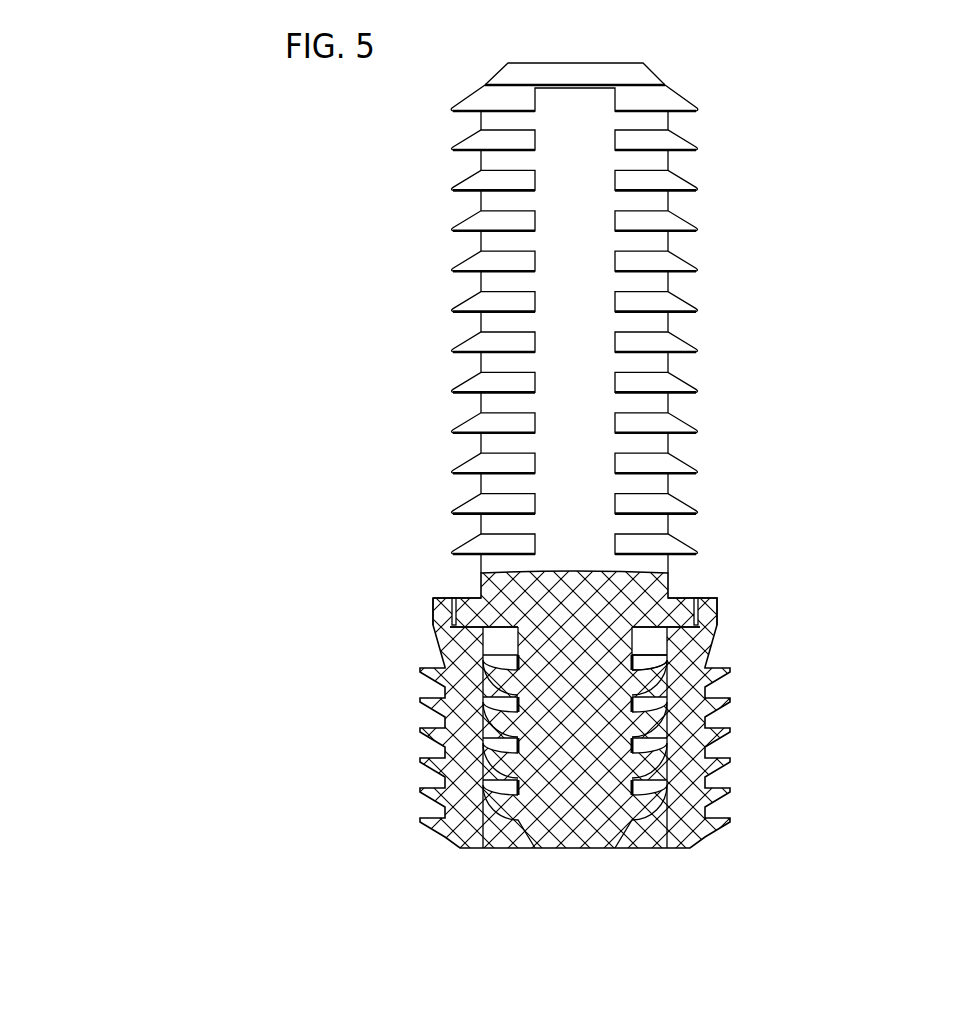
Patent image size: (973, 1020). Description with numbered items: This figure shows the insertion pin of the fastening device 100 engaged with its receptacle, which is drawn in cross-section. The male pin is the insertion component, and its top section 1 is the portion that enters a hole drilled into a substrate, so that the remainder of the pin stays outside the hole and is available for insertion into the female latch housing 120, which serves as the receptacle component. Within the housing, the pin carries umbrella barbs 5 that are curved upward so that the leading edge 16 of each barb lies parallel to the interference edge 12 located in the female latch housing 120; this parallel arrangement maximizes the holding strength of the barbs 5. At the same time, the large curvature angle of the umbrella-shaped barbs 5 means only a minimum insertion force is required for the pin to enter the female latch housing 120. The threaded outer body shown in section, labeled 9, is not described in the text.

The fastening device 100 is at (573, 541).
The top section 1 is at (570, 280).
The outer threaded sleeve 9 is at (682, 742).
The umbrella barbs 5 is at (665, 681).
The leading edge 16 is at (680, 652).
The interference edge 12 is at (498, 652).
The female latch housing 120 is at (431, 613).